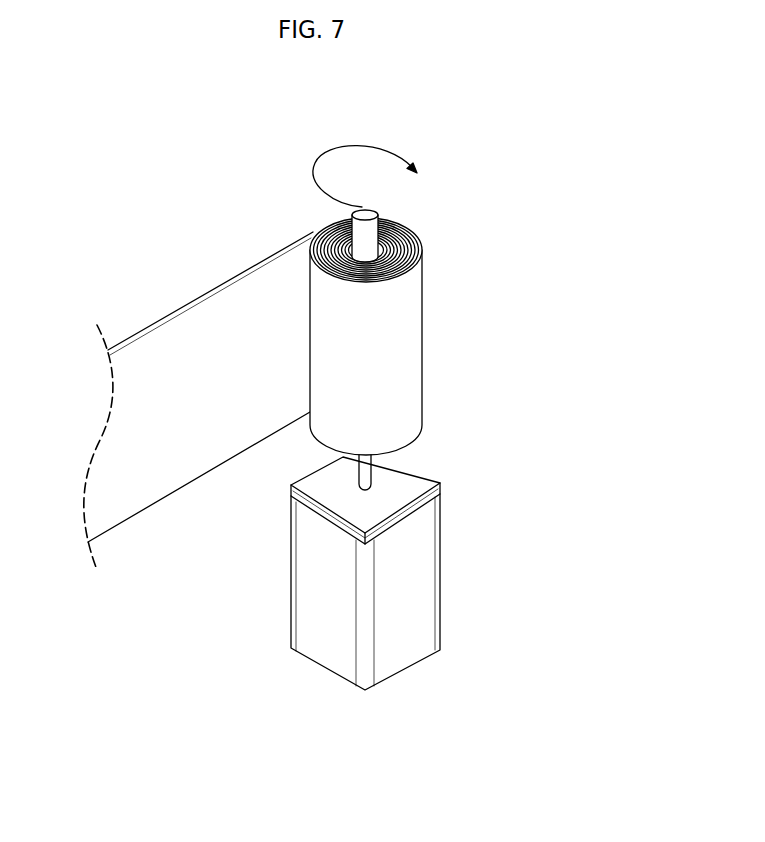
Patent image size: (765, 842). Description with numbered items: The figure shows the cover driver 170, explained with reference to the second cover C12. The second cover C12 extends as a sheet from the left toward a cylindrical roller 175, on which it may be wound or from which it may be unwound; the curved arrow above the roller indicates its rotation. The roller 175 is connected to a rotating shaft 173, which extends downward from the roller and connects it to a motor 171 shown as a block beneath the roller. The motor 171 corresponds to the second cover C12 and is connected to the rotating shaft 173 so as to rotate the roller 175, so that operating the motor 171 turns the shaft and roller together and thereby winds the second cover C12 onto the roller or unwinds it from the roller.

The cover driver 170 is at (462, 190).
The motor 171 is at (415, 595).
The rotating shaft 173 is at (376, 470).
The roller 175 is at (368, 233).
The second cover C12 is at (179, 305).